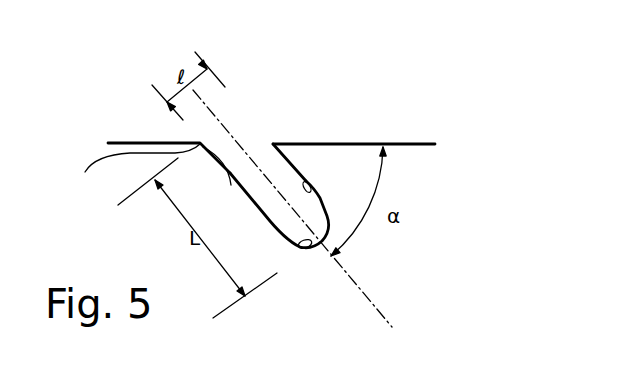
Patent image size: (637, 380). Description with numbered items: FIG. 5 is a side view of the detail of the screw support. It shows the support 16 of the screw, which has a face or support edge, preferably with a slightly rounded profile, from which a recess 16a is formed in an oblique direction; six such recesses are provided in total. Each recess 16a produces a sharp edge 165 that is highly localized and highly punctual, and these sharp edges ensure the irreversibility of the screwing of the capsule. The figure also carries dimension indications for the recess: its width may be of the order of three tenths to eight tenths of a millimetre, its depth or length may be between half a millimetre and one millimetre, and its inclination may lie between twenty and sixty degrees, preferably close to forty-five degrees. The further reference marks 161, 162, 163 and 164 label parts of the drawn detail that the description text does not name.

The support 16 is at (418, 160).
The recess 16a is at (248, 134).
The bending edge 161 is at (201, 143).
The free end of tab 162 is at (306, 247).
The bent tab 163 is at (311, 192).
The underside line of strip 164 is at (123, 165).
The sharp edge 165 is at (273, 144).